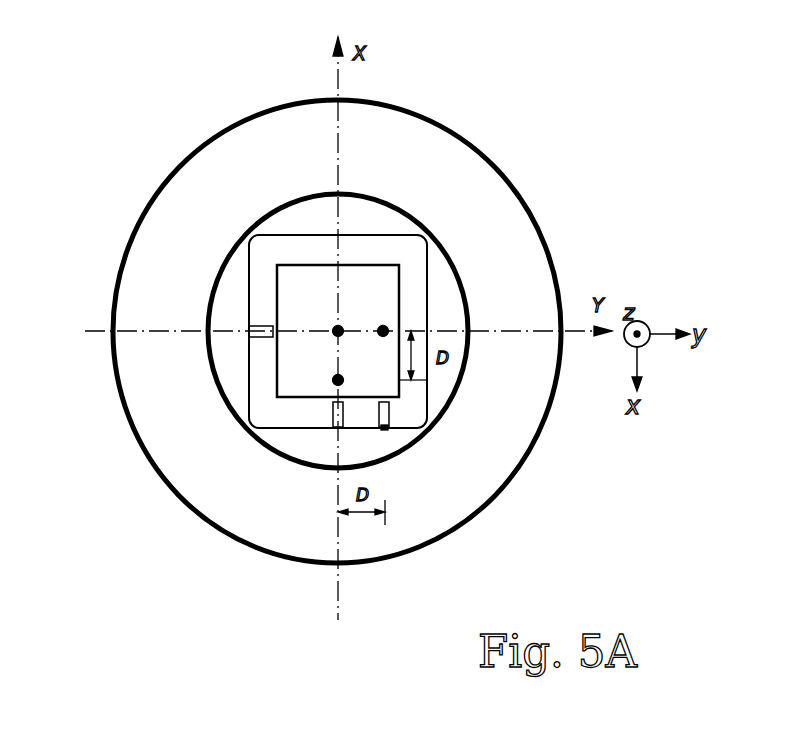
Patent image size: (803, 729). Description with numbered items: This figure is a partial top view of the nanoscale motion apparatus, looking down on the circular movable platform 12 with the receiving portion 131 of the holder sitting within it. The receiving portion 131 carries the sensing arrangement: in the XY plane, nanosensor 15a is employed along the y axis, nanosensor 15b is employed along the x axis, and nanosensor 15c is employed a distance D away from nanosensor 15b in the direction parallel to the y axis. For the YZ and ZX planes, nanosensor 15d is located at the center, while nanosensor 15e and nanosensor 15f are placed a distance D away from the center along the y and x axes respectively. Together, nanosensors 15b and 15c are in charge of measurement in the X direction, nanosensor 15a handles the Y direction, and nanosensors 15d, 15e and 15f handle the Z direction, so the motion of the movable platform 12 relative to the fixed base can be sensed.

The movable platform 12 is at (468, 177).
The receiving portion 131 is at (263, 251).
The nanosensor 15a is at (247, 332).
The nanosensor 15b is at (336, 405).
The nanosensor 15c is at (385, 415).
The nanosensor 15d is at (338, 331).
The nanosensor 15e is at (383, 331).
The nanosensor 15f is at (337, 380).